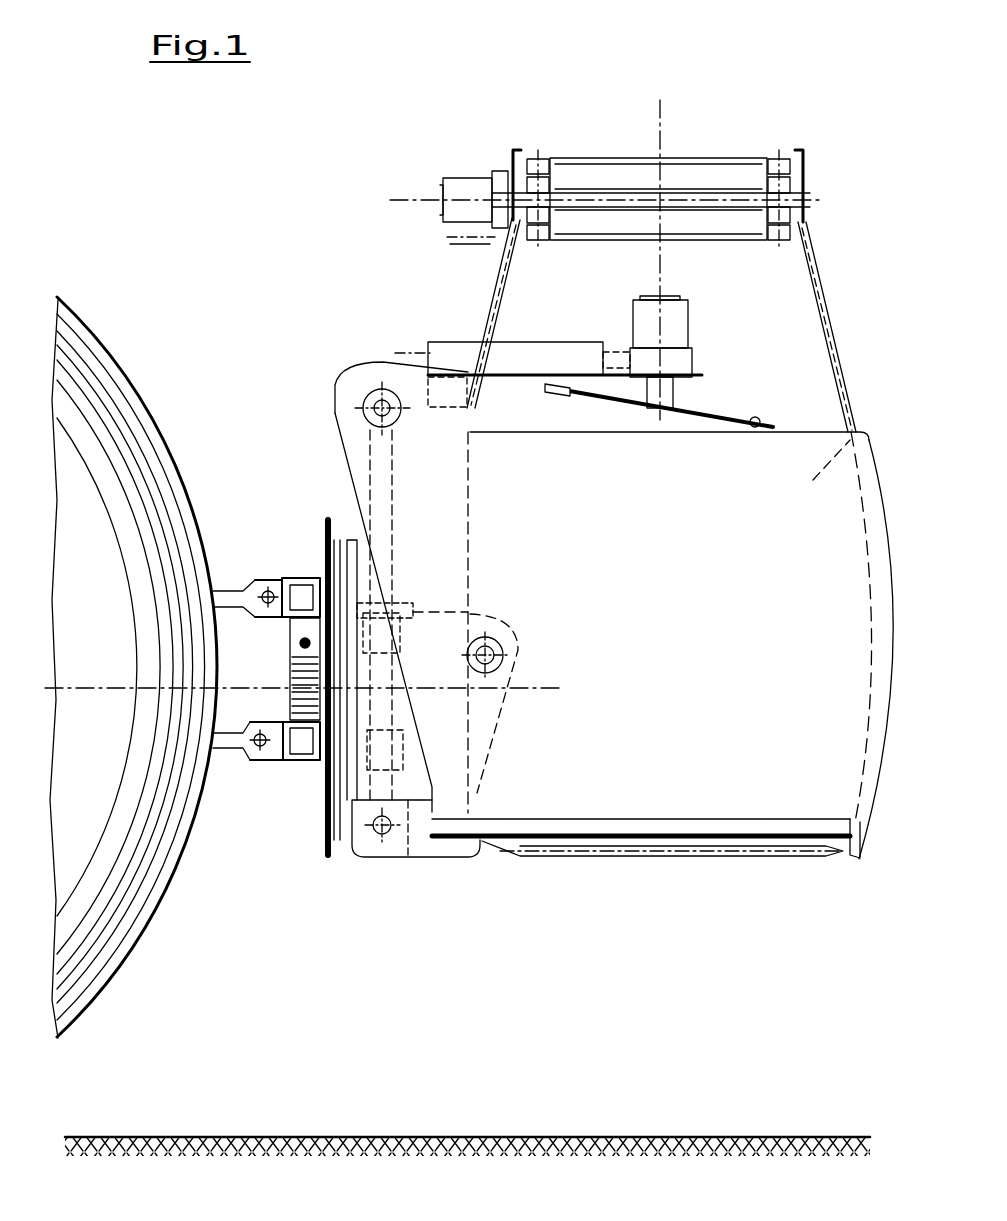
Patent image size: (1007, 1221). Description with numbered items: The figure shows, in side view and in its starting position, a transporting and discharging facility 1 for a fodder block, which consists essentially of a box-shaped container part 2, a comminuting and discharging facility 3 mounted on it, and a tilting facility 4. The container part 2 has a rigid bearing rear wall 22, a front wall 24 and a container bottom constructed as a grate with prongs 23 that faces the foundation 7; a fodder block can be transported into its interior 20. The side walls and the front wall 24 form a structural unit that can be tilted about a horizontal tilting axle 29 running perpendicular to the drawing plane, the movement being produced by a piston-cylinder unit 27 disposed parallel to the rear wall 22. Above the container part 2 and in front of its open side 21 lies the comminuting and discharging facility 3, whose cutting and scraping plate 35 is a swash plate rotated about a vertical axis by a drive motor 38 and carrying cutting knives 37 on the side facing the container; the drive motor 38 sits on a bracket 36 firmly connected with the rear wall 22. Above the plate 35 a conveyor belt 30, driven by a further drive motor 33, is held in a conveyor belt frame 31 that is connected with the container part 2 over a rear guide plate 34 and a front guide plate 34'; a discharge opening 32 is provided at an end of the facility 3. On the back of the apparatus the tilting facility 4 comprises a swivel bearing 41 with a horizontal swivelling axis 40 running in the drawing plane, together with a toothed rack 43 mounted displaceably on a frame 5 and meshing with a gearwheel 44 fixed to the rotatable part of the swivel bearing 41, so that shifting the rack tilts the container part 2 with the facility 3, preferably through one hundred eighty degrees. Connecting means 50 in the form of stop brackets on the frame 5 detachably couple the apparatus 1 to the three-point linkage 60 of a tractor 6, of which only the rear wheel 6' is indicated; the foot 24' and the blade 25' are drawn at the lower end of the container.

The transporting and discharging facility 1 is at (327, 228).
The container part 2 is at (664, 643).
The comminuting and discharging facility 3 is at (625, 251).
The tilting facility 4 is at (365, 699).
The frame 5 is at (295, 600).
The tractor 6 is at (133, 640).
The rear wheel 6' is at (131, 661).
The foundation 7 is at (390, 1135).
The interior 20 is at (860, 428).
The open side 21 is at (793, 428).
The rear wall 22 is at (478, 528).
The grate with prongs 23 is at (577, 858).
The front wall 24 is at (833, 645).
The foot of side wall 24' is at (837, 877).
The blade 25' is at (662, 887).
The piston-cylinder unit 27 is at (315, 590).
The tilting axle 29 is at (505, 650).
The conveyor belt 30 is at (678, 158).
The conveyor belt frame 31 is at (511, 152).
The discharge opening 32 is at (608, 292).
The drive motor 33 is at (450, 185).
The guide plate 34 is at (454, 313).
The front guide plate 34' is at (850, 327).
The cutting and scraping plate 35 is at (747, 393).
The bracket 36 is at (522, 368).
The cutting knives 37 is at (563, 395).
The drive motor 38 is at (646, 305).
The swivelling axis 40 is at (240, 688).
The swivel bearing 41 is at (345, 722).
The toothed rack 43 is at (280, 593).
The gearwheel 44 is at (272, 755).
The connecting means 50 is at (262, 592).
The three-point linkage 60 is at (230, 603).